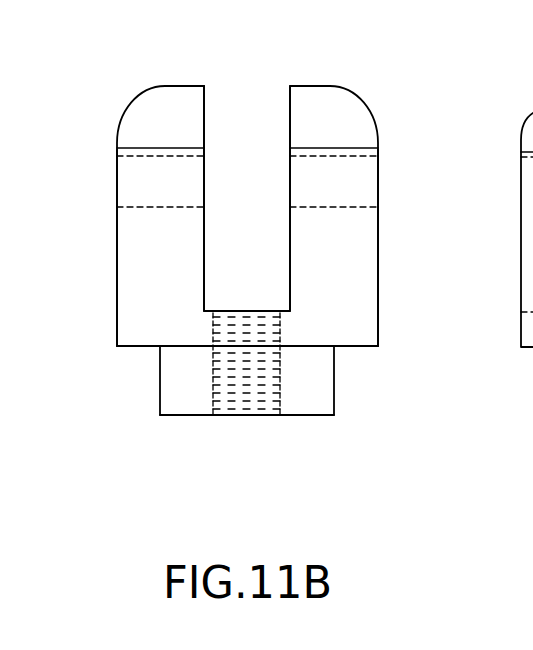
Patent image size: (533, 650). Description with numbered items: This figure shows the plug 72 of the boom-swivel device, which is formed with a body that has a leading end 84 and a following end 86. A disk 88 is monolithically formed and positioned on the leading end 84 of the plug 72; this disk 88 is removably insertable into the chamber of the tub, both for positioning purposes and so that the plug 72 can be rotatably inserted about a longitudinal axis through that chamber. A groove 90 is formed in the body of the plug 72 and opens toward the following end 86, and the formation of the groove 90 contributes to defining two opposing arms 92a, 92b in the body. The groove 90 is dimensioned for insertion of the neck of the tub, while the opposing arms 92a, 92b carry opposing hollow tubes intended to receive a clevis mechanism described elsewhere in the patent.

The plug 72 is at (355, 100).
The leading end 84 is at (168, 415).
The following end 86 is at (195, 85).
The disk 88 is at (334, 386).
The groove 90 is at (245, 112).
The opposing arm 92a is at (117, 188).
The opposing arm 92b is at (378, 237).